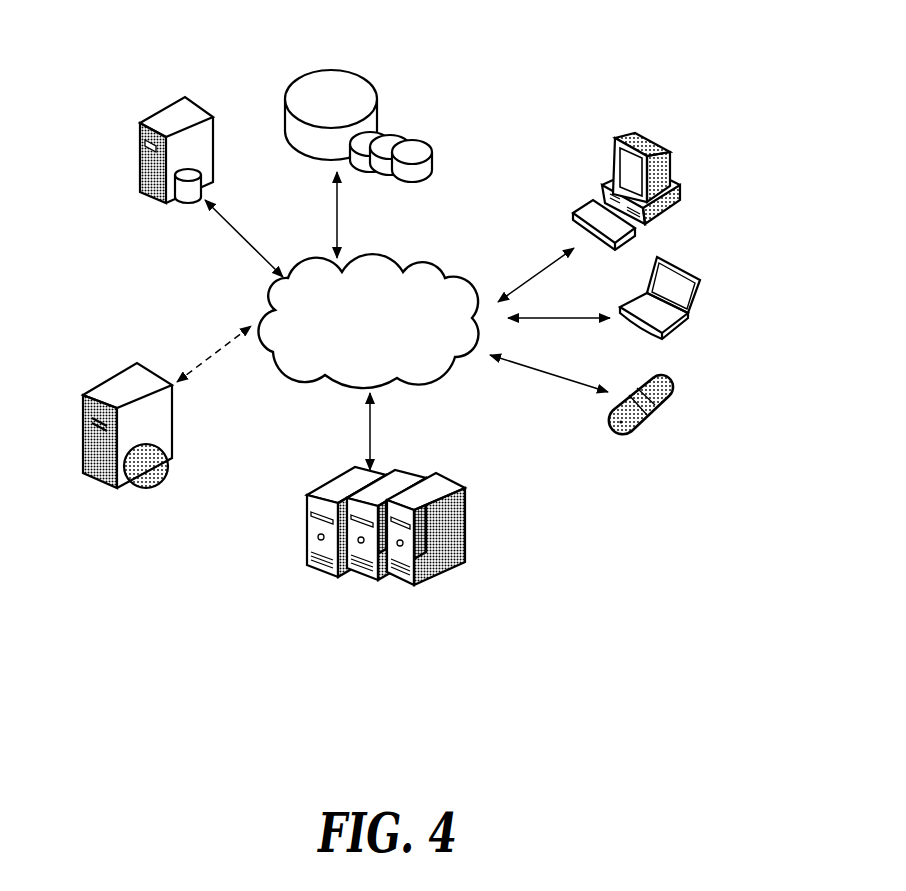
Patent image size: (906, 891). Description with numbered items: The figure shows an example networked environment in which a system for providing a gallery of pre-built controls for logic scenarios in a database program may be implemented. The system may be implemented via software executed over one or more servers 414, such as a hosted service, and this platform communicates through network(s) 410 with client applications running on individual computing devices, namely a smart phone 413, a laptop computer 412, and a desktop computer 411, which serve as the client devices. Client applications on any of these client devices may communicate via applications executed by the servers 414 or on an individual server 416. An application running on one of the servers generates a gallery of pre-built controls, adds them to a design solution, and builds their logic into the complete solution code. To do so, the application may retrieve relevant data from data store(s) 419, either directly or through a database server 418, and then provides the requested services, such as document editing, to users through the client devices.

The network(s) 410 is at (373, 245).
The desktop computer 411 is at (668, 128).
The laptop computer 412 is at (700, 258).
The smart phone 413 is at (672, 373).
The servers 414 is at (333, 470).
The individual server 416 is at (103, 378).
The database server 418 is at (173, 210).
The data store(s) 419 is at (346, 50).